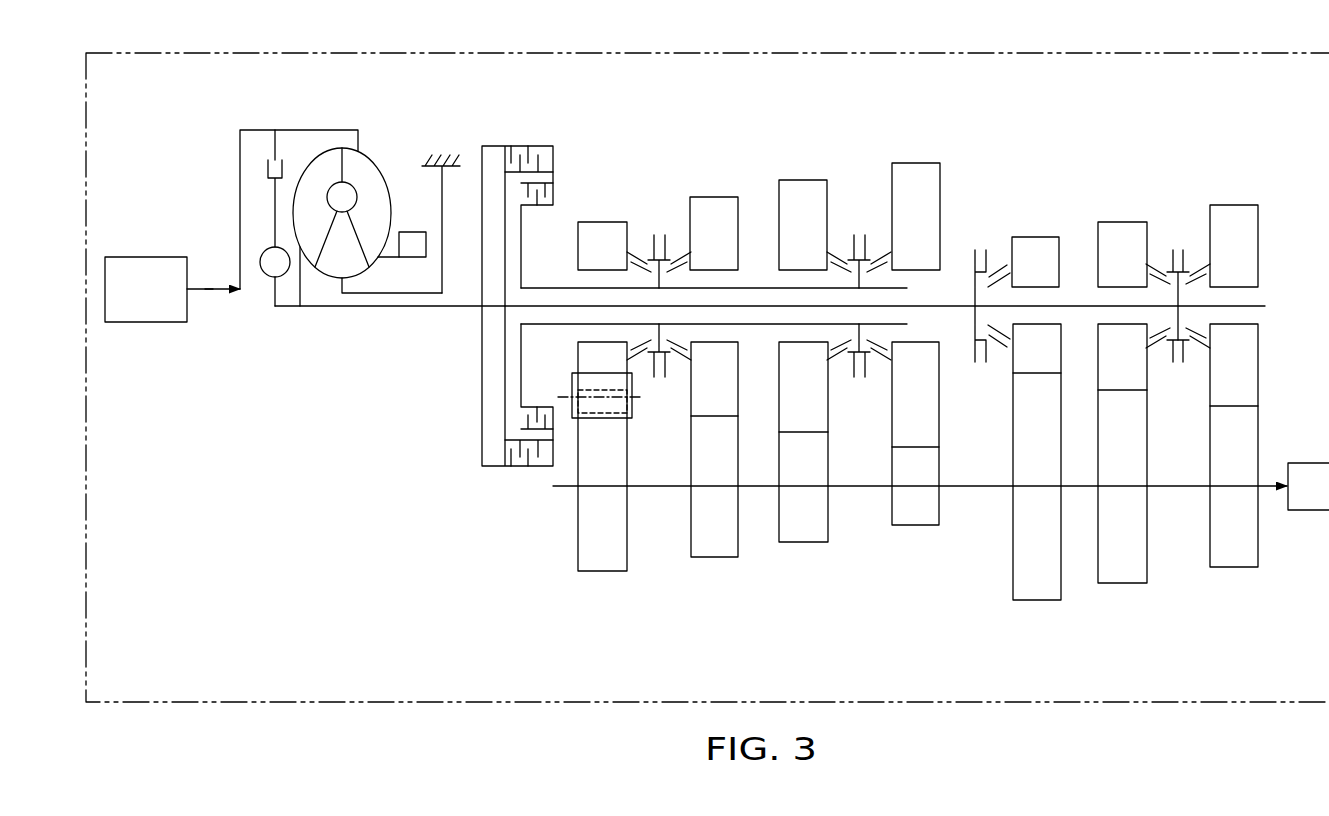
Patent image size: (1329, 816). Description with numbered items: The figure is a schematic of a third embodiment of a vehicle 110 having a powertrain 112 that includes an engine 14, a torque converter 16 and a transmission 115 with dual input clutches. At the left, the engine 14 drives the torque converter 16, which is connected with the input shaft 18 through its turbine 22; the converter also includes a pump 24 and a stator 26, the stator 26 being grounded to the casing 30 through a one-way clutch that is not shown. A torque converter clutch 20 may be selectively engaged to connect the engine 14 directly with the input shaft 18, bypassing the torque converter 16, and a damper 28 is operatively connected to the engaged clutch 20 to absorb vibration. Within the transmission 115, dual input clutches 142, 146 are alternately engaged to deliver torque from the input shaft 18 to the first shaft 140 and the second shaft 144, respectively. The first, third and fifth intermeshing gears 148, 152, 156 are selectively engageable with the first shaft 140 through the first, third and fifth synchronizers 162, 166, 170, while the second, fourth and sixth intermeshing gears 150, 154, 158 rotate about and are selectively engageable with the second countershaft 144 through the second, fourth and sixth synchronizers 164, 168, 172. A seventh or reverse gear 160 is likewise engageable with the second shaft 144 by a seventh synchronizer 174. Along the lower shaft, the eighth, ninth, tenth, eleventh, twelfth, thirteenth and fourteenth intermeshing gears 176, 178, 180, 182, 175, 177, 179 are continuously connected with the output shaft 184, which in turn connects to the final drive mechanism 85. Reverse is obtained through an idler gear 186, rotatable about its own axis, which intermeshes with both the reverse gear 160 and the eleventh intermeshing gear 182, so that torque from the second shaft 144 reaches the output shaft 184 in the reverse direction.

The engine 14 is at (143, 323).
The torque converter 16 is at (367, 228).
The input shaft 18 is at (440, 310).
The torque converter clutch 20 is at (263, 148).
The turbine 22 is at (318, 162).
The pump 24 is at (384, 178).
The stator 26 is at (330, 278).
The damper 28 is at (262, 278).
The casing 30 is at (456, 168).
The final drive mechanism 85 is at (1308, 486).
The vehicle 110 is at (1180, 53).
The powertrain 112 is at (246, 452).
The transmission 115 is at (963, 135).
The first shaft 140 is at (1083, 305).
The first input clutch 142 is at (520, 142).
The second shaft 144 is at (763, 288).
The second input clutch 146 is at (551, 400).
The first intermeshing gear 148 is at (1059, 248).
The second intermeshing gear 150 is at (739, 222).
The third intermeshing gear 152 is at (1098, 245).
The fourth intermeshing gear 154 is at (779, 225).
The fifth intermeshing gear 156 is at (1258, 222).
The sixth intermeshing gear 158 is at (940, 195).
The seventh or reverse gear 160 is at (578, 240).
The first synchronizer 162 is at (1007, 258).
The second synchronizer 164 is at (681, 248).
The third synchronizer 166 is at (1157, 255).
The fourth synchronizer 168 is at (836, 248).
The fifth synchronizer 170 is at (1200, 256).
The sixth synchronizer 172 is at (882, 248).
The seventh synchronizer 174 is at (636, 247).
The twelfth intermeshing gear 175 is at (1061, 585).
The eighth intermeshing gear 176 is at (738, 540).
The thirteenth intermeshing gear 177 is at (1147, 565).
The ninth intermeshing gear 178 is at (828, 527).
The fourteenth intermeshing gear 179 is at (1258, 548).
The tenth intermeshing gear 180 is at (939, 515).
The eleventh intermeshing gear 182 is at (627, 555).
The output shaft 184 is at (1270, 480).
The idler gear 186 is at (632, 383).